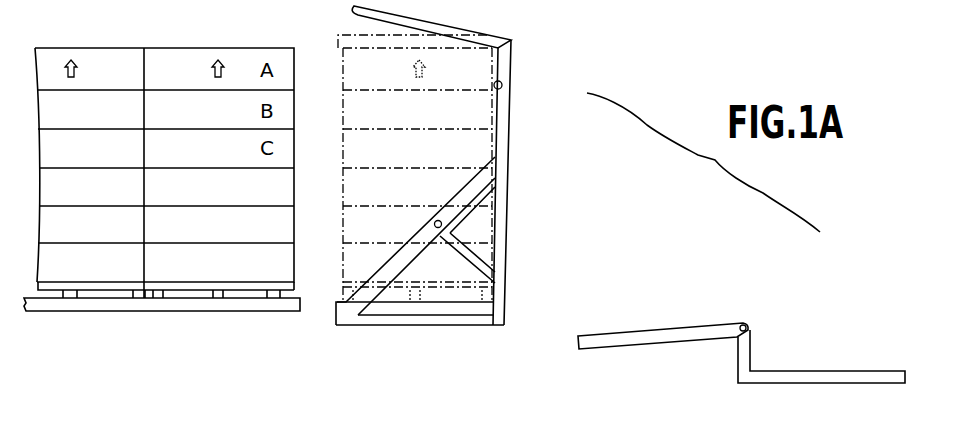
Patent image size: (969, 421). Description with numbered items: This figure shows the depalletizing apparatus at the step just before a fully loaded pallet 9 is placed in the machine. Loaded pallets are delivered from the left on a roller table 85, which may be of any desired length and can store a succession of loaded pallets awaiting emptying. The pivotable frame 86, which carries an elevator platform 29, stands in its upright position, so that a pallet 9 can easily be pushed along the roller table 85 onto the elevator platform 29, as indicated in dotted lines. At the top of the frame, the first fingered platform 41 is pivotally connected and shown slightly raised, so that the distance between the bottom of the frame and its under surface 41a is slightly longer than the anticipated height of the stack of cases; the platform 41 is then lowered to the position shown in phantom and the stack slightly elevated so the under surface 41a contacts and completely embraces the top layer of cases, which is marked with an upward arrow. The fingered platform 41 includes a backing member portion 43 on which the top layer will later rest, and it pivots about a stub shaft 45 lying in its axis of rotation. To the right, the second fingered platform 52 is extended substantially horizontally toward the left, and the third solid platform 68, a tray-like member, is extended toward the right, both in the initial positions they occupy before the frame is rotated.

The pallet 9 is at (267, 292).
The roller table 85 is at (219, 312).
The first fingered platform 41 is at (334, 30).
The under surface of fingered platform 41a is at (358, 21).
The backing member portion 43 is at (511, 66).
The stub shaft 45 is at (503, 90).
The elevator platform 29 is at (337, 308).
The pivotable frame 86 is at (475, 328).
The second fingered platform 52 is at (662, 345).
The third solid platform 68 is at (855, 370).